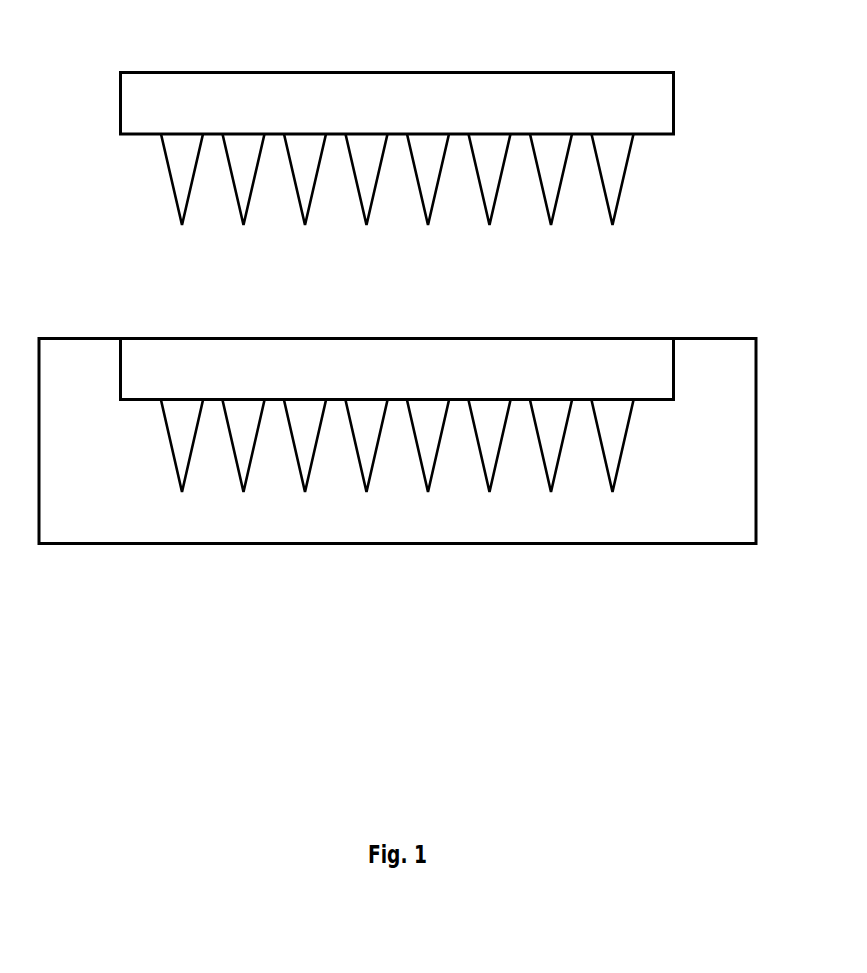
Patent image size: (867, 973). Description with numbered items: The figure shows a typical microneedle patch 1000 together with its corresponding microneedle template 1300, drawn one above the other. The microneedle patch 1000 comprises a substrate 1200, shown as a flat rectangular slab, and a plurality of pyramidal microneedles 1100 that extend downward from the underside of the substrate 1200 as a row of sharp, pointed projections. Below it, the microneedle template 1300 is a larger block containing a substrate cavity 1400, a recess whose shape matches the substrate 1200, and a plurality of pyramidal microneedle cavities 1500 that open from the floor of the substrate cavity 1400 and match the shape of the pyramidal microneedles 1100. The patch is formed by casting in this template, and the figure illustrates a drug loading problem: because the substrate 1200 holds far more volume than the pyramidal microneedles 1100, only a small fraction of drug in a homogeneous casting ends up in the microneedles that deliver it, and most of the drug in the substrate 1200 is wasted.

The microneedle patch 1000 is at (431, 26).
The pyramidal microneedles 1100 is at (642, 225).
The substrate 1200 is at (620, 90).
The microneedle template 1300 is at (141, 522).
The substrate cavity 1400 is at (610, 357).
The pyramidal microneedle cavities 1500 is at (640, 567).